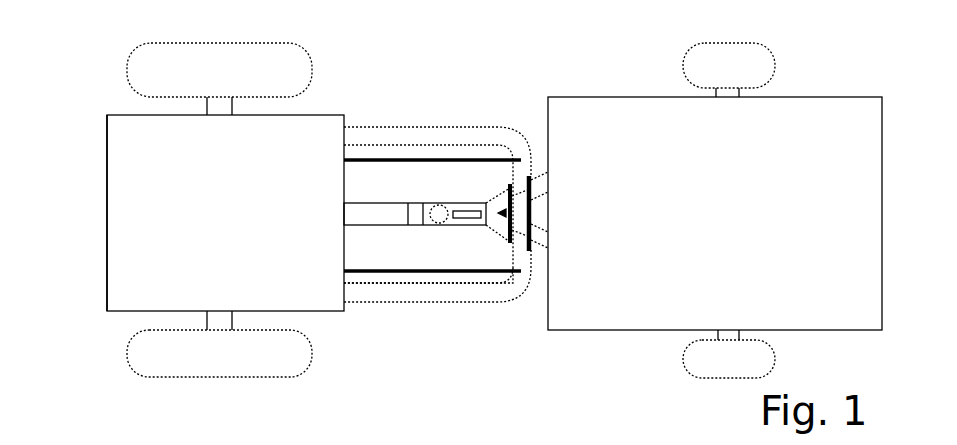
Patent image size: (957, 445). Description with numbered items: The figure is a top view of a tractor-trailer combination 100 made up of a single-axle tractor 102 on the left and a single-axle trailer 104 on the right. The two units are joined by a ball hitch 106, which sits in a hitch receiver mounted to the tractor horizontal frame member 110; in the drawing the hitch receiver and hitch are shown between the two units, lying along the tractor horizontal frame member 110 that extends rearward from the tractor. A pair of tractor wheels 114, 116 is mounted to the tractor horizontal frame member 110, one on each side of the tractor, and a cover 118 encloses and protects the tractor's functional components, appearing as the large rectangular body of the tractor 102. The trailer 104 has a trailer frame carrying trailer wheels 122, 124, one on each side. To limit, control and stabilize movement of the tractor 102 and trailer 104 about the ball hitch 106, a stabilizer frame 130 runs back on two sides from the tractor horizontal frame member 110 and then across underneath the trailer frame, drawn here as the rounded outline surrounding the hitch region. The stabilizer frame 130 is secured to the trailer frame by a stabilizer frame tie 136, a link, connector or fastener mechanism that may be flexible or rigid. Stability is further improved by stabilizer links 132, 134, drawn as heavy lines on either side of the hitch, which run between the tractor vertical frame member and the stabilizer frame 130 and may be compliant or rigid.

The tractor-trailer combination 100 is at (425, 43).
The single-axle tractor 102 is at (212, 222).
The single-axle trailer 104 is at (699, 223).
The ball hitch 106 is at (440, 205).
The tractor horizontal frame member 110 is at (410, 228).
The tractor wheel 114 is at (128, 357).
The tractor wheel 116 is at (130, 62).
The cover 118 is at (107, 203).
The trailer wheel 122 is at (683, 360).
The trailer wheel 124 is at (703, 43).
The stabilizer frame 130 is at (425, 125).
The stabilizer link 132 is at (405, 163).
The stabilizer link 134 is at (500, 268).
The stabilizer frame tie 136 is at (533, 200).